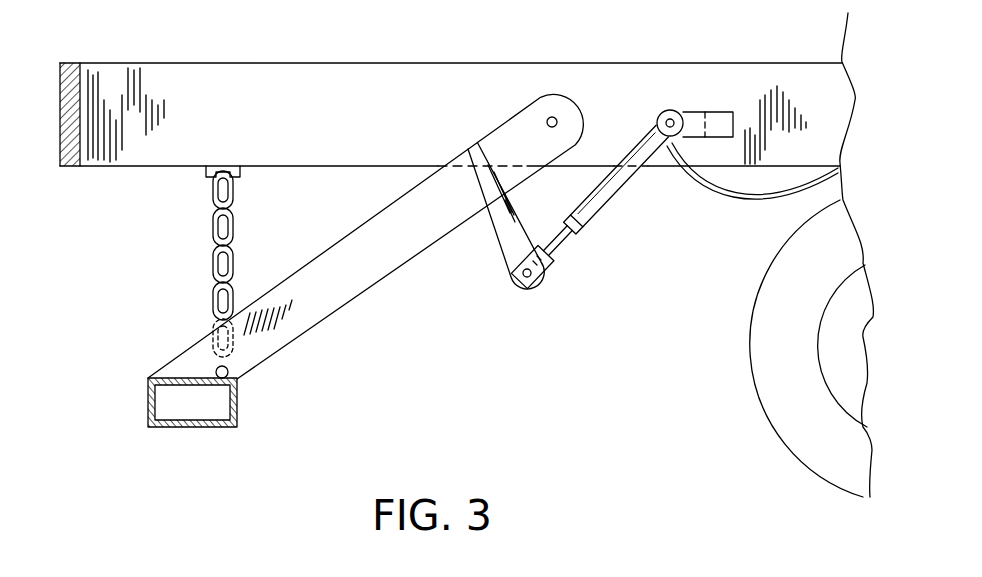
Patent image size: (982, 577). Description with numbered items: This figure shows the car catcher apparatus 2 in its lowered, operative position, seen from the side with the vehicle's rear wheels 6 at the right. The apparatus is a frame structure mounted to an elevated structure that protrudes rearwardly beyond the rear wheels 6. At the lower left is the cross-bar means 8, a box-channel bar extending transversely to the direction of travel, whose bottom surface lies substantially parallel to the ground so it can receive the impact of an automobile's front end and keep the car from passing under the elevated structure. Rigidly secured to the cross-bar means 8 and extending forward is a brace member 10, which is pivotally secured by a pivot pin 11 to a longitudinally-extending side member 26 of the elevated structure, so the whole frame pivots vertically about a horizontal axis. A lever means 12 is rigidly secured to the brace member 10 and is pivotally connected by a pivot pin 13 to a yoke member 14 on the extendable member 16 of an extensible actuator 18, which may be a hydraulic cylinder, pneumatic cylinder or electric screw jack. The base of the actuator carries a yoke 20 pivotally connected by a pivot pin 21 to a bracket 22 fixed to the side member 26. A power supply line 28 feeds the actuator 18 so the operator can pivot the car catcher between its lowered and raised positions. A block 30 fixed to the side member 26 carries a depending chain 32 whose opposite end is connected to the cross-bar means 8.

The car catcher apparatus 2 is at (115, 315).
The rear wheels 6 is at (763, 380).
The cross-bar means 8 is at (197, 430).
The brace members 10 is at (313, 313).
The pivot pin 11 is at (546, 122).
The lever means 12 is at (495, 256).
The pivot pin 13 is at (517, 290).
The yoke member 14 is at (560, 270).
The extendable member 16 is at (557, 240).
The extensible actuator 18 is at (618, 192).
The yoke 20 is at (658, 118).
The pivot pin 21 is at (672, 112).
The bracket 22 is at (720, 113).
The side member 26 is at (317, 127).
The power supply line 28 is at (778, 198).
The block 30 is at (212, 173).
The chain 32 is at (213, 265).